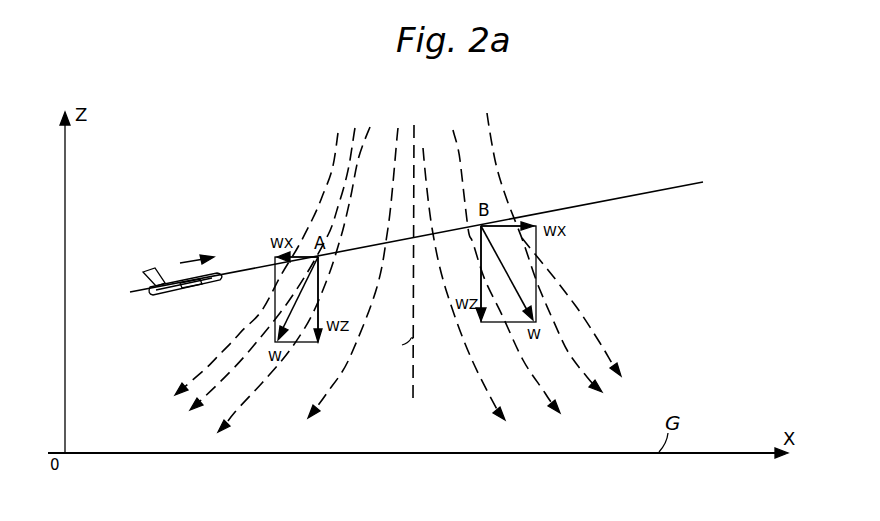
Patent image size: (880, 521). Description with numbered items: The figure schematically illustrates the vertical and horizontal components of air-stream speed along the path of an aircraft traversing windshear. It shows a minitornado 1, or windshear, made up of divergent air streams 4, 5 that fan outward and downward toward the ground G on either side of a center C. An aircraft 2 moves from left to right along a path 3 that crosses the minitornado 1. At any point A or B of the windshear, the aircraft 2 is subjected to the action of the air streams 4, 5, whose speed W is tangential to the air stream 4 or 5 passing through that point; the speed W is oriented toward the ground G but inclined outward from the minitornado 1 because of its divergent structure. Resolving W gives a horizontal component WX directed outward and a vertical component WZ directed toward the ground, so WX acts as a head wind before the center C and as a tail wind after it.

The minitornado 1 is at (507, 140).
The aircraft 2 is at (173, 285).
The path 3 is at (660, 190).
The air stream 4 is at (342, 203).
The air stream 5 is at (470, 183).